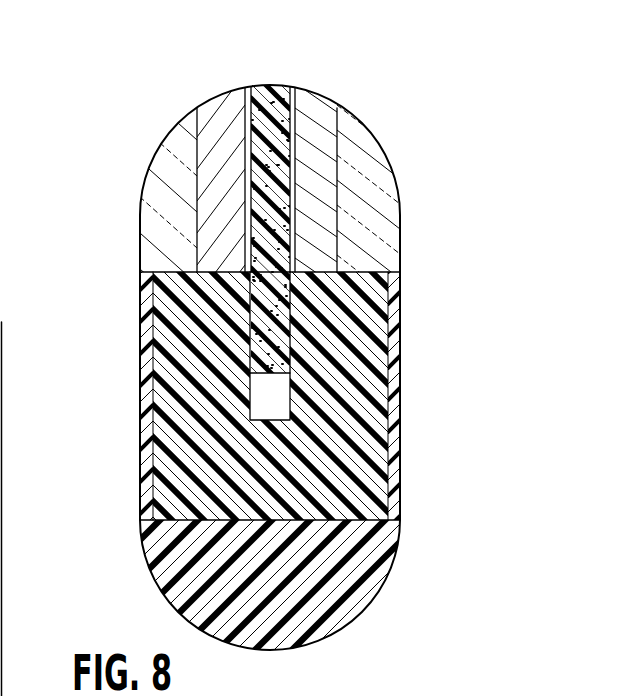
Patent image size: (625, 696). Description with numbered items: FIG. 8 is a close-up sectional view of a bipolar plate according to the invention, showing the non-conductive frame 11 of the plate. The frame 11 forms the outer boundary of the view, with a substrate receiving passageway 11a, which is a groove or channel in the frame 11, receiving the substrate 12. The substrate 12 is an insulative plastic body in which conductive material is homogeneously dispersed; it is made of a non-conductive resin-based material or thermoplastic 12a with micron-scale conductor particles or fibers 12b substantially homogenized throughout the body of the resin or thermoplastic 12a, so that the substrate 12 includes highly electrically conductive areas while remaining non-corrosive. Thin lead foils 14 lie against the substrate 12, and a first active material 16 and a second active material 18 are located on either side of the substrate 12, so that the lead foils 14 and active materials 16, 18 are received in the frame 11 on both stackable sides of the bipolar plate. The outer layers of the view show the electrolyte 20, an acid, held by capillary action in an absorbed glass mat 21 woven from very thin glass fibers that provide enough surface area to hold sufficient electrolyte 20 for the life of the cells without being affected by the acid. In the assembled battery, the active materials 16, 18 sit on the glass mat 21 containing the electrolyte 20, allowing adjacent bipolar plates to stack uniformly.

The frame 11 is at (190, 480).
The substrate receiving passageway 11a is at (273, 400).
The substrate 12 is at (263, 343).
The non-conductive resin-based material or thermoplastic 12a is at (265, 87).
The conductor particles or fibers 12b is at (283, 87).
The lead foil 14 is at (250, 86).
The first active material 16 is at (222, 112).
The second active material 18 is at (320, 105).
The electrolyte 20 is at (158, 175).
The glass mat 21 is at (265, 162).